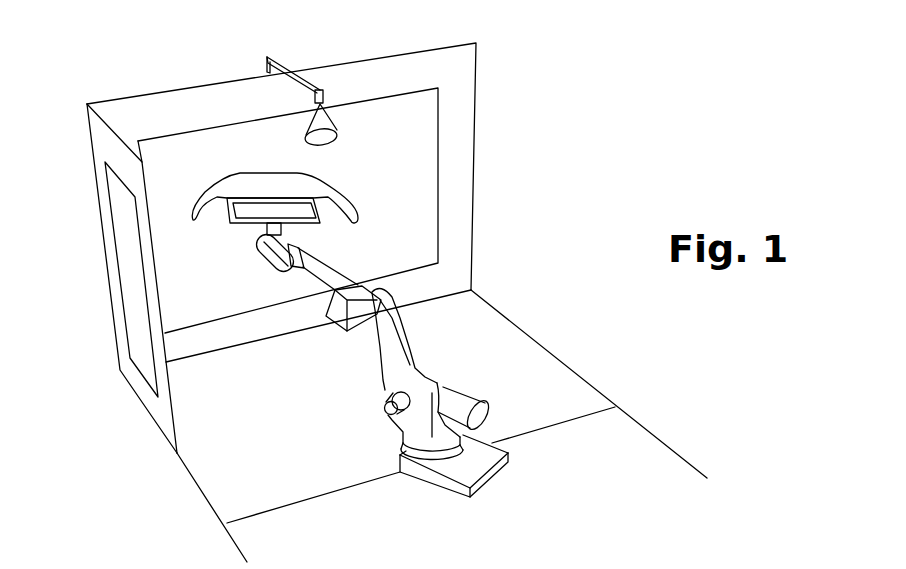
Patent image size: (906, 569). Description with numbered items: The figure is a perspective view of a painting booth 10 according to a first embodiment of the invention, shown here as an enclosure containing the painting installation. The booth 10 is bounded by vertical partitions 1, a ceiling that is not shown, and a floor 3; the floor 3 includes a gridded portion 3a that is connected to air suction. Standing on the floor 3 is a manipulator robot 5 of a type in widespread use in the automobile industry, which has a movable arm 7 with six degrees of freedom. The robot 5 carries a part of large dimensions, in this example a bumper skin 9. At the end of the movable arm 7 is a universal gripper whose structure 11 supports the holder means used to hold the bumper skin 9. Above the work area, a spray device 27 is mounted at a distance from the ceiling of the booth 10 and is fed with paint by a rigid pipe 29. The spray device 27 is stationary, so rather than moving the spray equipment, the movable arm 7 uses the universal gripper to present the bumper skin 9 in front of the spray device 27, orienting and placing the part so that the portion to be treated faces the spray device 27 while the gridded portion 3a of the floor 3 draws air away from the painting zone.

The vertical partitions 1 is at (108, 142).
The floor 3 is at (623, 465).
The gridded portion 3a is at (533, 382).
The manipulator robot 5 is at (423, 437).
The movable arm 7 is at (402, 335).
The bumper skin 9 is at (250, 188).
The painting booth 10 is at (598, 61).
The structure 11 is at (245, 220).
The spray device 27 is at (305, 130).
The rigid pipe 29 is at (305, 78).